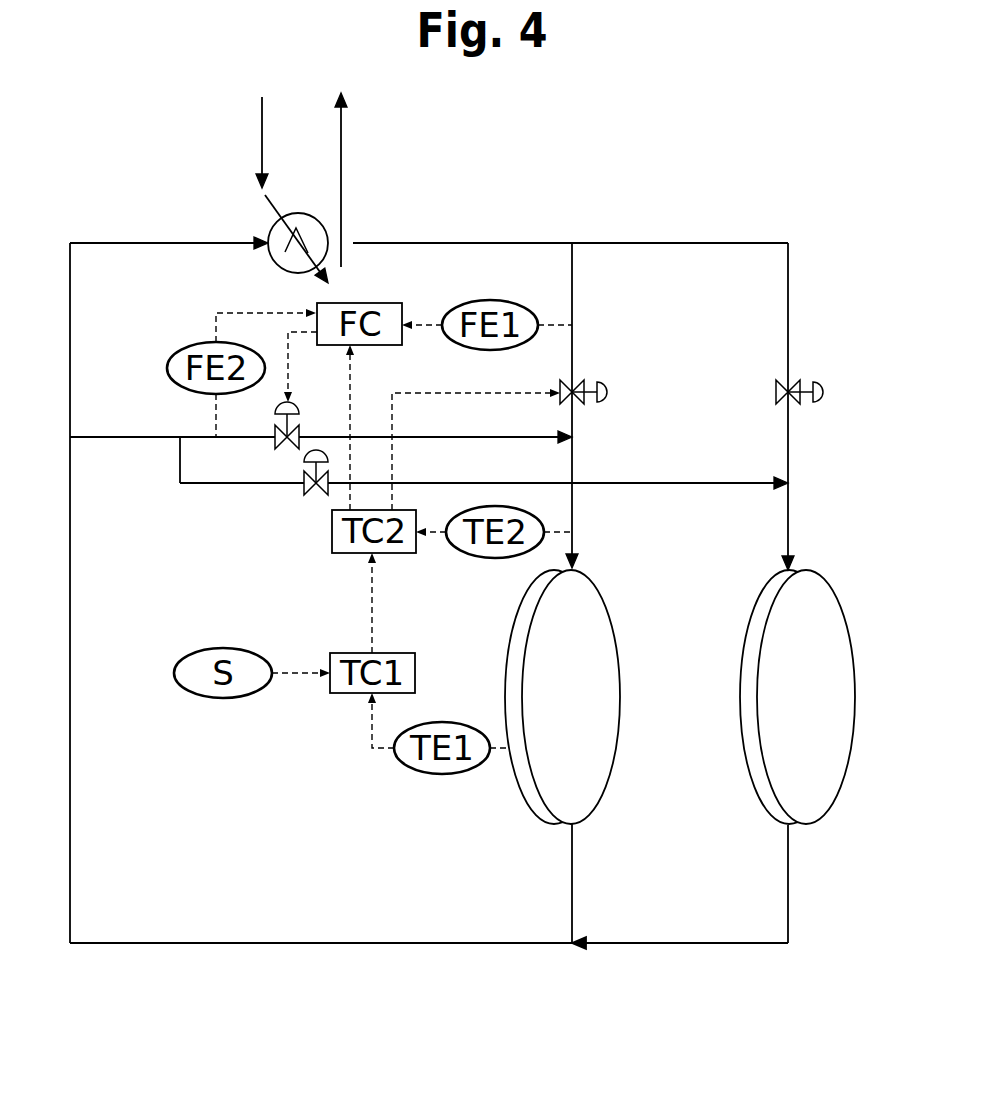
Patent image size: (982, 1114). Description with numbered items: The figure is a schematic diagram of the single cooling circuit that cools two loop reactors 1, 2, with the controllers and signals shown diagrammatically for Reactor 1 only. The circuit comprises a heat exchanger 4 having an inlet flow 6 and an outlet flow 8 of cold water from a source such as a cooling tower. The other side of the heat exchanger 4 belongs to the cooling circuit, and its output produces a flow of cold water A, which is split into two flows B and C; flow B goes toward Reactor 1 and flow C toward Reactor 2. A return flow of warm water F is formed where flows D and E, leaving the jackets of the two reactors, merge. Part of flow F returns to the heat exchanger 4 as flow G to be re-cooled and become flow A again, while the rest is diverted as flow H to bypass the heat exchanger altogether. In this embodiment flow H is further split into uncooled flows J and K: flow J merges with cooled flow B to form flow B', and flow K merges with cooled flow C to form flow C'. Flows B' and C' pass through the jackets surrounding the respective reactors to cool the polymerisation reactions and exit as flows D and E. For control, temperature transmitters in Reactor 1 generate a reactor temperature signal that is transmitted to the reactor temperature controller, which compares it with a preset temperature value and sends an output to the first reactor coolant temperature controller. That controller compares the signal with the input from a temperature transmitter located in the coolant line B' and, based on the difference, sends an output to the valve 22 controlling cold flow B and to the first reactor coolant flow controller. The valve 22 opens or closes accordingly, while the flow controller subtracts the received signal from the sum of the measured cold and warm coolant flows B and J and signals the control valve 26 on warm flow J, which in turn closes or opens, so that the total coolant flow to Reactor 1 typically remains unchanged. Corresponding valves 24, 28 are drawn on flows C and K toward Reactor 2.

The Reactor 1 is at (608, 787).
The Reactor 2 is at (757, 795).
The heat exchanger 4 is at (267, 229).
The inlet flow 6 is at (262, 142).
The outlet flow 8 is at (341, 180).
The valve 22 is at (573, 405).
The control valve 24 is at (788, 380).
The control valve 26 is at (272, 443).
The control valve 28 is at (305, 487).
The flow of cold water A is at (428, 243).
The flow B is at (625, 405).
The flow B' is at (626, 556).
The flow C is at (841, 406).
The flow C' is at (838, 514).
The flow D is at (572, 880).
The flow E is at (790, 895).
The return flow of warm water F is at (318, 943).
The flow G is at (160, 243).
The flow H is at (133, 437).
The flow J is at (517, 437).
The flow K is at (717, 485).